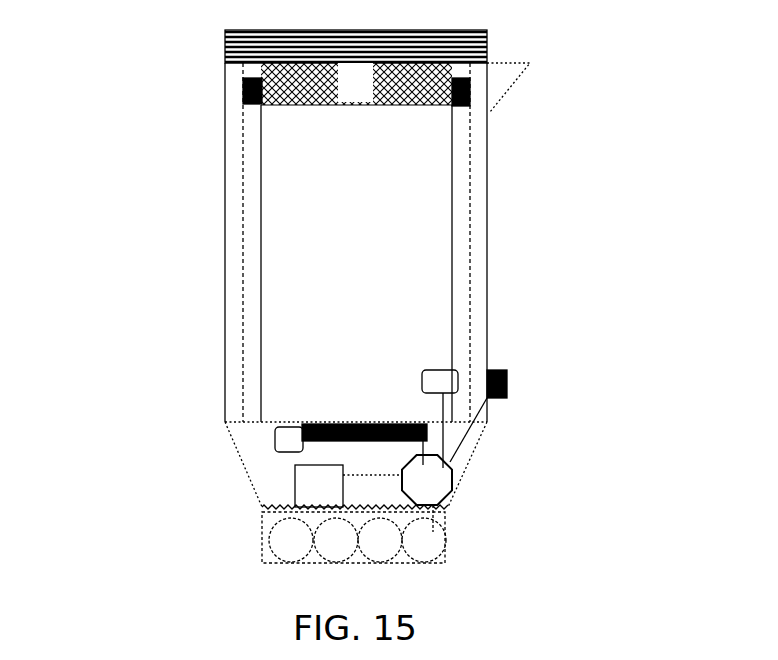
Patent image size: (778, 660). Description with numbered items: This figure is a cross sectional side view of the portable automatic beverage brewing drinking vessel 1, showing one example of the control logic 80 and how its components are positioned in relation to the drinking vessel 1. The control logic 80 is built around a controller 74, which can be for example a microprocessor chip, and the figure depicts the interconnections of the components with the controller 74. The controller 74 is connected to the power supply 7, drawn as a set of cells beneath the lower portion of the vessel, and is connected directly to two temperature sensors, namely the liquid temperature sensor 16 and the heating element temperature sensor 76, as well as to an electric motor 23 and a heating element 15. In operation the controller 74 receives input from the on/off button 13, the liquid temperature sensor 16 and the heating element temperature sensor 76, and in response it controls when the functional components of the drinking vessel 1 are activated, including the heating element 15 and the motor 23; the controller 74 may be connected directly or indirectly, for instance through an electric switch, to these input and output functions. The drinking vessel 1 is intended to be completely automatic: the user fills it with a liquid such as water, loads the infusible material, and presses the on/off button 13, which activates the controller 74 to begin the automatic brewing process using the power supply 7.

The drinking vessel 1 is at (487, 268).
The power supply 7 is at (442, 543).
The on/off button 13 is at (507, 383).
The heating element 15 is at (338, 424).
The liquid temperature sensor 16 is at (442, 385).
The electric motor 23 is at (295, 483).
The controller 74 is at (452, 482).
The heating element temperature sensor 76 is at (403, 468).
The control logic 80 is at (512, 443).